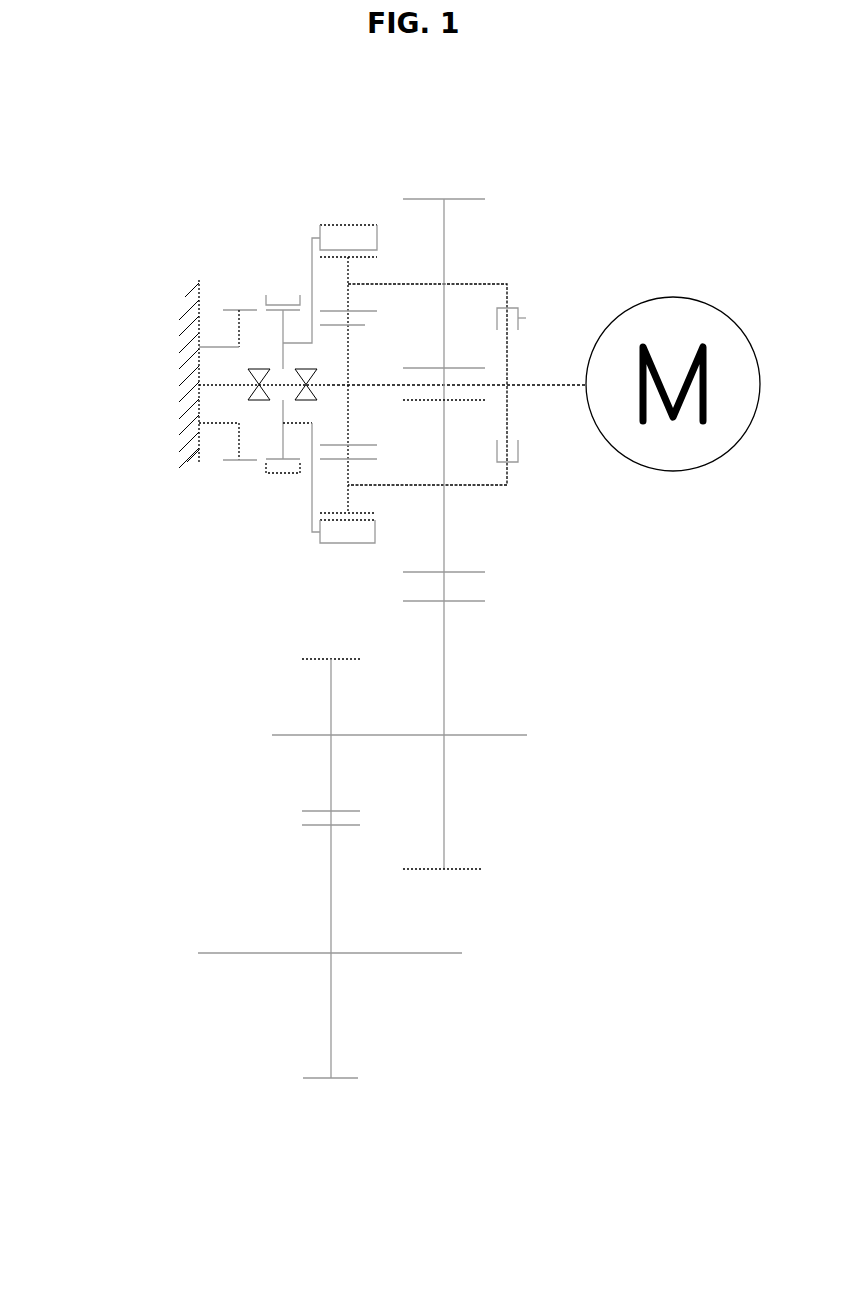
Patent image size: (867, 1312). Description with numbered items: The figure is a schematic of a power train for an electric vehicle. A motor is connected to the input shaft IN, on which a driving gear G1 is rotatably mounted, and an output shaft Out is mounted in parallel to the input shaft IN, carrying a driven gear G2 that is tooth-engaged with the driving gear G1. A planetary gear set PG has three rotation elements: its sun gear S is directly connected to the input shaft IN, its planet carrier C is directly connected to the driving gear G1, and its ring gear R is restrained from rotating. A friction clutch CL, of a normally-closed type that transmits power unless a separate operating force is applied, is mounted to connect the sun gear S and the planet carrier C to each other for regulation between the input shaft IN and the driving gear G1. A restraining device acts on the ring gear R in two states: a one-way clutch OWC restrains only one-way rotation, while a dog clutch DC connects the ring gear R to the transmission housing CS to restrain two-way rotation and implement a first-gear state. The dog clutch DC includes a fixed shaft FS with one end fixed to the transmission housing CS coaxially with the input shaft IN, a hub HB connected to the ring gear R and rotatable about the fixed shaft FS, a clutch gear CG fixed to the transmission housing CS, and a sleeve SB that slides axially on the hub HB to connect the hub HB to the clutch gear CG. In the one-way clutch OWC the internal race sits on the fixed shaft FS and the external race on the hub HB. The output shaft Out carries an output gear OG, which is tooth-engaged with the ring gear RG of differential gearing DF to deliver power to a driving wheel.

The planetary gear set PG is at (337, 336).
The ring gear R is at (324, 229).
The sun gear S is at (365, 328).
The planet carrier C is at (431, 282).
The driving gear G1 is at (467, 199).
The friction clutch CL is at (521, 318).
The input shaft IN is at (565, 384).
The transmission housing CS is at (197, 330).
The fixed shaft FS is at (222, 385).
The one-way clutch OWC is at (251, 396).
The clutch gear CG is at (225, 462).
The hub HB is at (283, 434).
The sleeve SB is at (283, 470).
The dog clutch DC is at (239, 439).
The output gear OG is at (322, 658).
The output shaft Out is at (502, 734).
The driven gear G2 is at (473, 870).
The differential gearing DF is at (338, 955).
The ring gear of differential gearing RG is at (338, 1080).